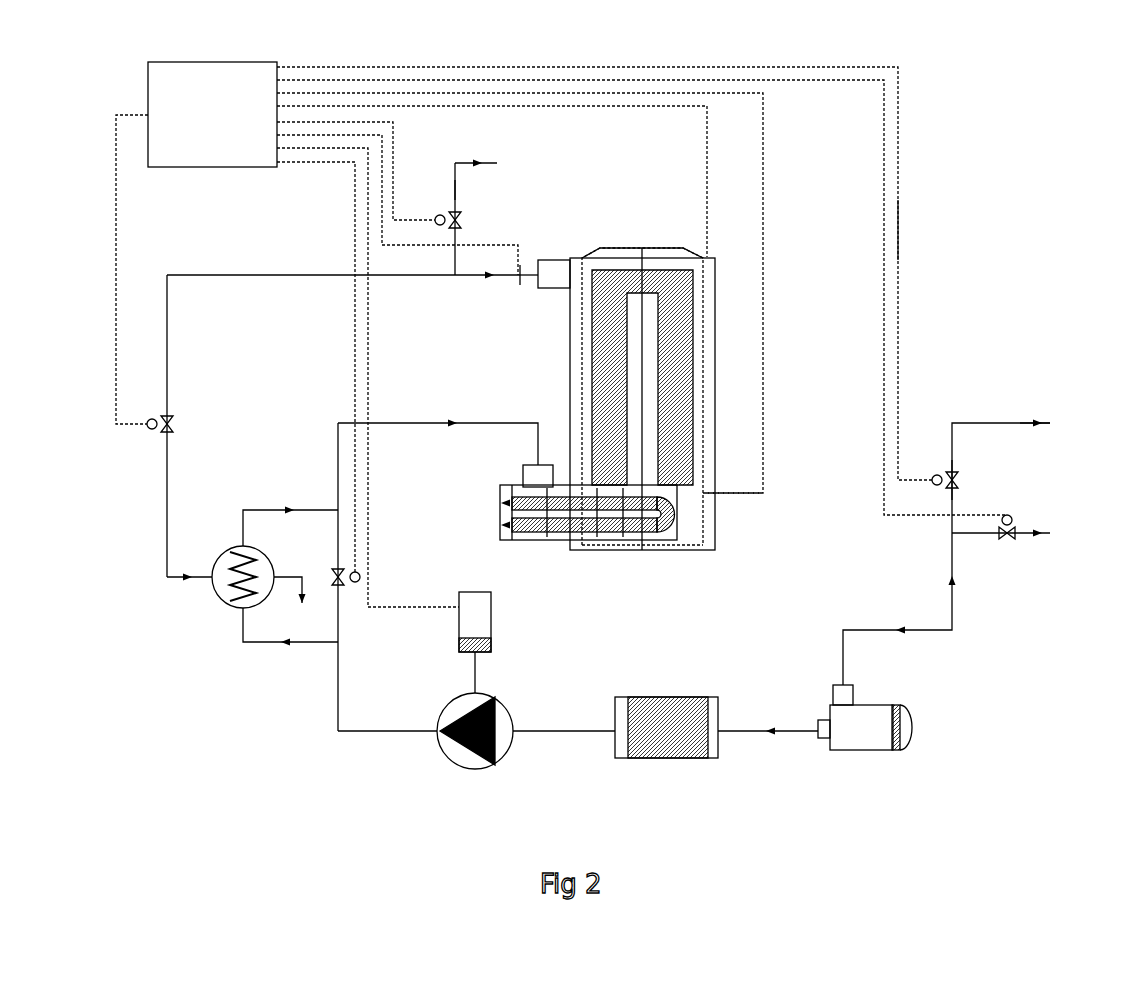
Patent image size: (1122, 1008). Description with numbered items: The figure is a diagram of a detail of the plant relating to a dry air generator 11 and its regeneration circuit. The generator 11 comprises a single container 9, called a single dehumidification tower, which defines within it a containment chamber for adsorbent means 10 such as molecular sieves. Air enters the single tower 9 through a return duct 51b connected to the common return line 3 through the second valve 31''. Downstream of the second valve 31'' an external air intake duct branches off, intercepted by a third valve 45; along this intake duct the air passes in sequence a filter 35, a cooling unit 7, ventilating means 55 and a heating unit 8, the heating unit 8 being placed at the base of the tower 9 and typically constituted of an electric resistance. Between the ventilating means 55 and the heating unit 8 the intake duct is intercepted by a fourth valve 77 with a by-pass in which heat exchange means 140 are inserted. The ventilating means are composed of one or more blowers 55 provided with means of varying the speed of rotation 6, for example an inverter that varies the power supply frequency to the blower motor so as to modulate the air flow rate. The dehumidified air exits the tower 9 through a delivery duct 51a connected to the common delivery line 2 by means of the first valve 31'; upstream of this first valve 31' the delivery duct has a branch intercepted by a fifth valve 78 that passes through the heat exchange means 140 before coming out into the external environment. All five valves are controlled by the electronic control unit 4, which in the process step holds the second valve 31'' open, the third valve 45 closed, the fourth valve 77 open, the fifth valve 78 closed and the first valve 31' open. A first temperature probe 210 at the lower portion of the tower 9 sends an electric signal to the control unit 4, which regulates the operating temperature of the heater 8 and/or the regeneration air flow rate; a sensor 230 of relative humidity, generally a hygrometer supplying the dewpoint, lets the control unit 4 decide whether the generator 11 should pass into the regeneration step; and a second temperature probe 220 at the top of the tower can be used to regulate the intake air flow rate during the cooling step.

The electronic control unit 4 is at (214, 125).
The delivery duct 51a is at (455, 190).
The common delivery line 2 is at (485, 164).
The first valve 31' is at (494, 219).
The second temperature probe 220 is at (712, 250).
The dry air generator 11 is at (932, 225).
The adsorbent means 10 is at (672, 315).
The single container 9 is at (716, 386).
The sensor of relative humidity 230 is at (514, 283).
The fifth valve 78 is at (150, 440).
The heating unit 8 is at (513, 487).
The first temperature probe 210 is at (724, 503).
The heat exchange means 140 is at (215, 600).
The fourth valve 77 is at (335, 590).
The means of varying the speed of rotation 6 is at (491, 620).
The ventilating means 55 is at (446, 758).
The cooling unit 7 is at (668, 758).
The filter 35 is at (865, 750).
The return duct 51b is at (955, 610).
The third valve 45 is at (1012, 548).
The common return line 3 is at (1051, 424).
The second valve 31'' is at (991, 480).